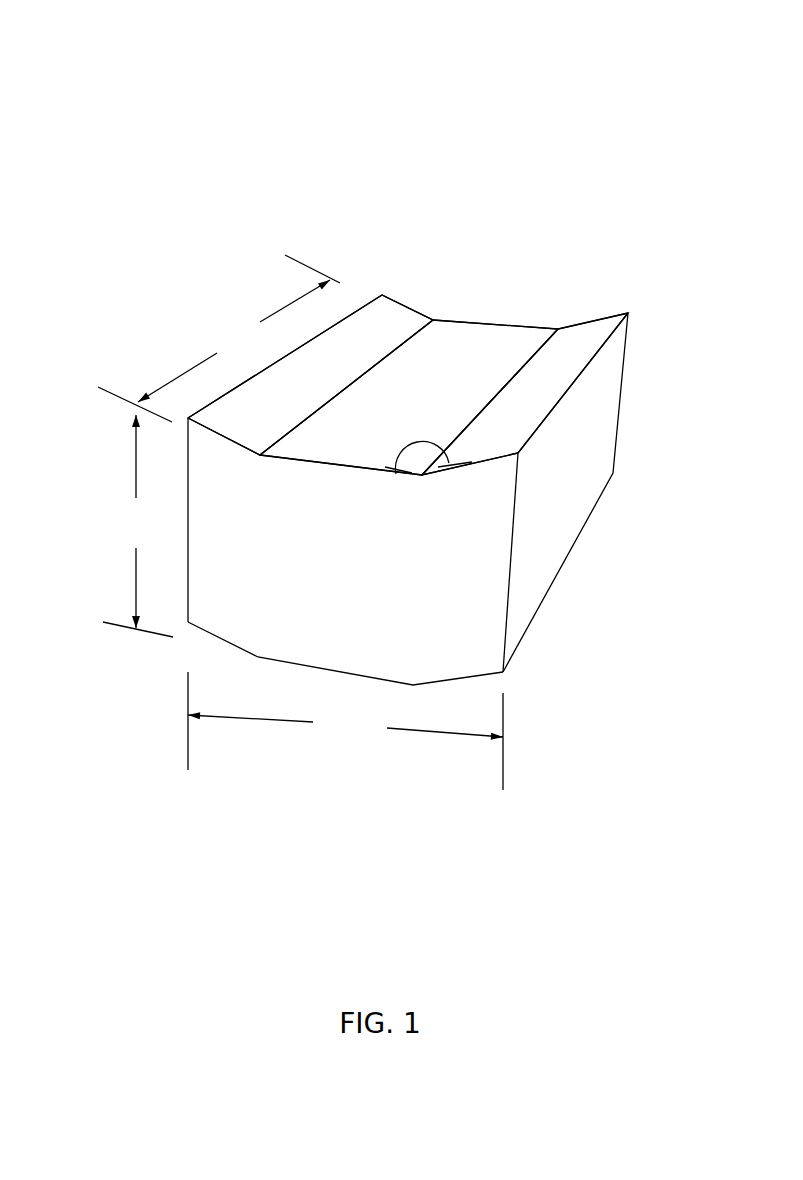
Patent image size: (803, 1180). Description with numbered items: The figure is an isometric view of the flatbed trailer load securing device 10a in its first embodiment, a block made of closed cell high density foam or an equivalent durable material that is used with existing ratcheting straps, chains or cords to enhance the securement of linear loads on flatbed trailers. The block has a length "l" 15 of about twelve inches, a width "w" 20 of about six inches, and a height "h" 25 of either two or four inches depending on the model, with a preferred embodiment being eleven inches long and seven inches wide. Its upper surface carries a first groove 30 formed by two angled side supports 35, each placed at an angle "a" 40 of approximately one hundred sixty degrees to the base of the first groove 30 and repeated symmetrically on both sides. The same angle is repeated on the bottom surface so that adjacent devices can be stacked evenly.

The flatbed trailer load securing device 10a is at (95, 145).
The length "l" 15 is at (220, 337).
The width "w" 20 is at (358, 742).
The height "h" 25 is at (127, 532).
The first groove 30 is at (473, 378).
The angled side supports 35 is at (390, 318).
The angle "a" 40 is at (412, 425).